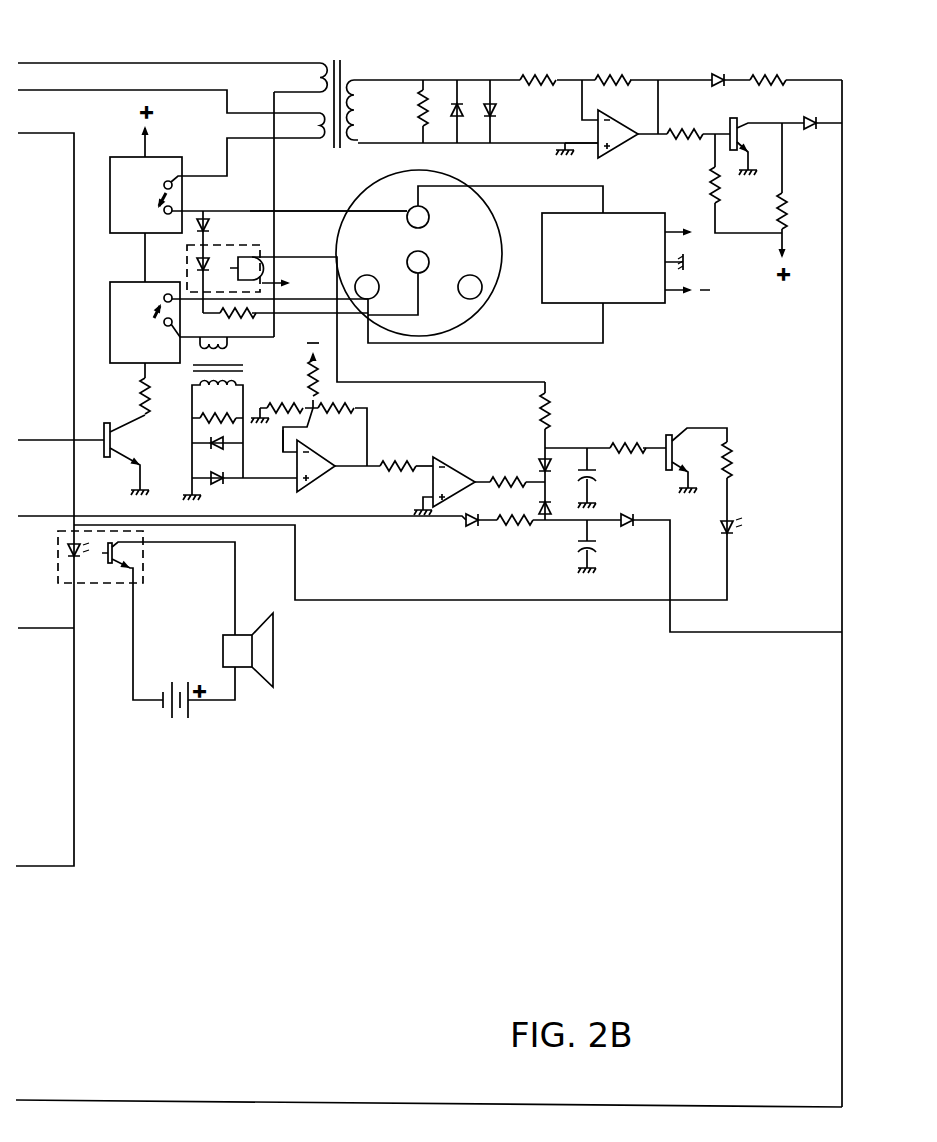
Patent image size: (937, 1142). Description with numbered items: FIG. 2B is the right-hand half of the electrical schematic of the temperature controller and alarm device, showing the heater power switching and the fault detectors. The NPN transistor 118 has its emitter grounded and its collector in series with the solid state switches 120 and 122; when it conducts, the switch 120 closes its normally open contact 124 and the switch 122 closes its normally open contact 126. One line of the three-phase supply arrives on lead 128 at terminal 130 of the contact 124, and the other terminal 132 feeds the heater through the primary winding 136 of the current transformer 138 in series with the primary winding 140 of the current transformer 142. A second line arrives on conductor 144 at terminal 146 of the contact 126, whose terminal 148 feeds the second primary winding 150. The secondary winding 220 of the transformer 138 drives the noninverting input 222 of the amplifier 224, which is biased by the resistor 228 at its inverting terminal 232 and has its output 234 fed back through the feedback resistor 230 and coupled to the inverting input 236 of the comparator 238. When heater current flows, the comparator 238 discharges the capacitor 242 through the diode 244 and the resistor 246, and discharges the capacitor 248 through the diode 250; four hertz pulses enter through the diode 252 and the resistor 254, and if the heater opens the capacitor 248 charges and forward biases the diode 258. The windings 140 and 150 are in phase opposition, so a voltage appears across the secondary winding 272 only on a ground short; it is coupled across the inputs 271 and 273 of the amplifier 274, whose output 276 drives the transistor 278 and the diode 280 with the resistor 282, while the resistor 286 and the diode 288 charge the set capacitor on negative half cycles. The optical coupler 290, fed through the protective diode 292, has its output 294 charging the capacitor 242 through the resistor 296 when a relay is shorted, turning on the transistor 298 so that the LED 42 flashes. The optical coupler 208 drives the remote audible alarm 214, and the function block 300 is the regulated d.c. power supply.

The LED 42 is at (724, 523).
The NPN transistor 118 is at (112, 440).
The solid state switch 120 is at (110, 360).
The solid state switch 122 is at (110, 230).
The normally open contact 124 is at (155, 336).
The normally open contact 126 is at (158, 206).
The lead 128 is at (419, 253).
The terminal 130 is at (164, 296).
The terminal 132 is at (164, 321).
The primary winding 136 is at (229, 345).
The current transformer 138 is at (248, 368).
The primary winding 140 is at (318, 58).
The current transformer 142 is at (338, 59).
The conductor 144 is at (290, 211).
The terminal 146 is at (177, 209).
The terminal 148 is at (164, 184).
The second primary winding 150 is at (322, 152).
The optical coupler 208 is at (88, 584).
The remote audible alarm 214 is at (268, 690).
The secondary winding 220 is at (298, 408).
The noninverting input 222 is at (263, 479).
The amplifier 224 is at (318, 457).
The resistor 228 is at (317, 388).
The feedback resistor 230 is at (346, 408).
The inverting terminal 232 is at (284, 440).
The output 234 is at (352, 468).
The inverting input 236 is at (399, 466).
The comparator 238 is at (456, 477).
The capacitor 242 is at (594, 476).
The diode 244 is at (549, 455).
The resistor 246 is at (508, 482).
The capacitor 248 is at (597, 551).
The diode 250 is at (556, 538).
The diode 252 is at (470, 526).
The resistor 254 is at (518, 519).
The diode 258 is at (634, 508).
The input 271 is at (557, 80).
The secondary winding 272 is at (362, 115).
The input 273 is at (612, 156).
The amplifier 274 is at (598, 134).
The output 276 is at (653, 136).
The transistor 278 is at (712, 168).
The diode 280 is at (718, 77).
The resistor 282 is at (780, 80).
The resistor 286 is at (784, 214).
The diode 288 is at (810, 119).
The optical coupler 290 is at (238, 245).
The protective diode 292 is at (208, 211).
The output 294 is at (314, 257).
The resistor 296 is at (549, 402).
The transistor 298 is at (670, 435).
The function block 300 is at (608, 304).